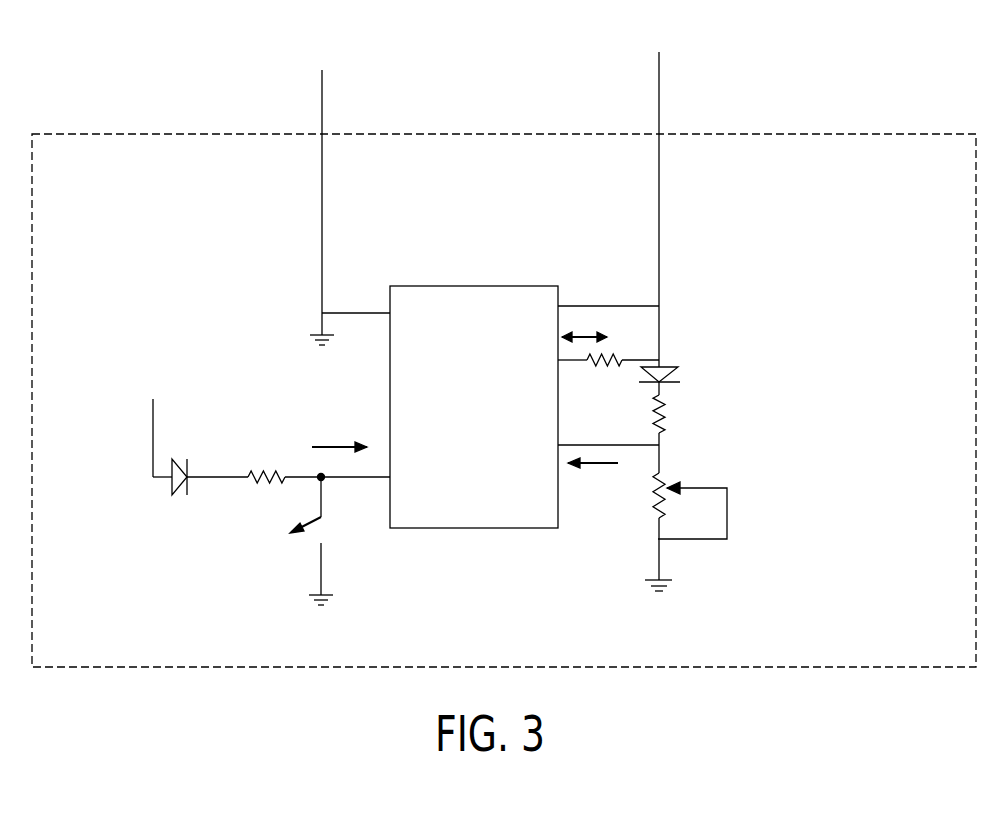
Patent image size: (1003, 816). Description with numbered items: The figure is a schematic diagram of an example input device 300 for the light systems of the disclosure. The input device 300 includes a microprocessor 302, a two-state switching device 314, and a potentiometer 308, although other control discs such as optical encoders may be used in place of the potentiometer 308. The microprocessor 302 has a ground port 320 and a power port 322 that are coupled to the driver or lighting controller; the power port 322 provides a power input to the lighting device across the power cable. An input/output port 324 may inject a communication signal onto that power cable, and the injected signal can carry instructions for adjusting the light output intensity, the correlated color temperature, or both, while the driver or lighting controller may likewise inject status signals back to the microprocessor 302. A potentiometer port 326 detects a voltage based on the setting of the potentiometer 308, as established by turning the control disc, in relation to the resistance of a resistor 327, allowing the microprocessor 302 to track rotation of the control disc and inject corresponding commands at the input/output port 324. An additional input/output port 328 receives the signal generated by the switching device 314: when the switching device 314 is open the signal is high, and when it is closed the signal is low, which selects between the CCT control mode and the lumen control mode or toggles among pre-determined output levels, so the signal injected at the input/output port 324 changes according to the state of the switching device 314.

The input device 300 is at (828, 132).
The microprocessor 302 is at (478, 283).
The potentiometer 308 is at (727, 517).
The two-state switching device 314 is at (297, 529).
The ground port 320 is at (340, 312).
The power port 322 is at (587, 303).
The input/output port 324 is at (640, 358).
The potentiometer port 326 is at (640, 447).
The resistor 327 is at (662, 423).
The additional input/output port 328 is at (367, 480).